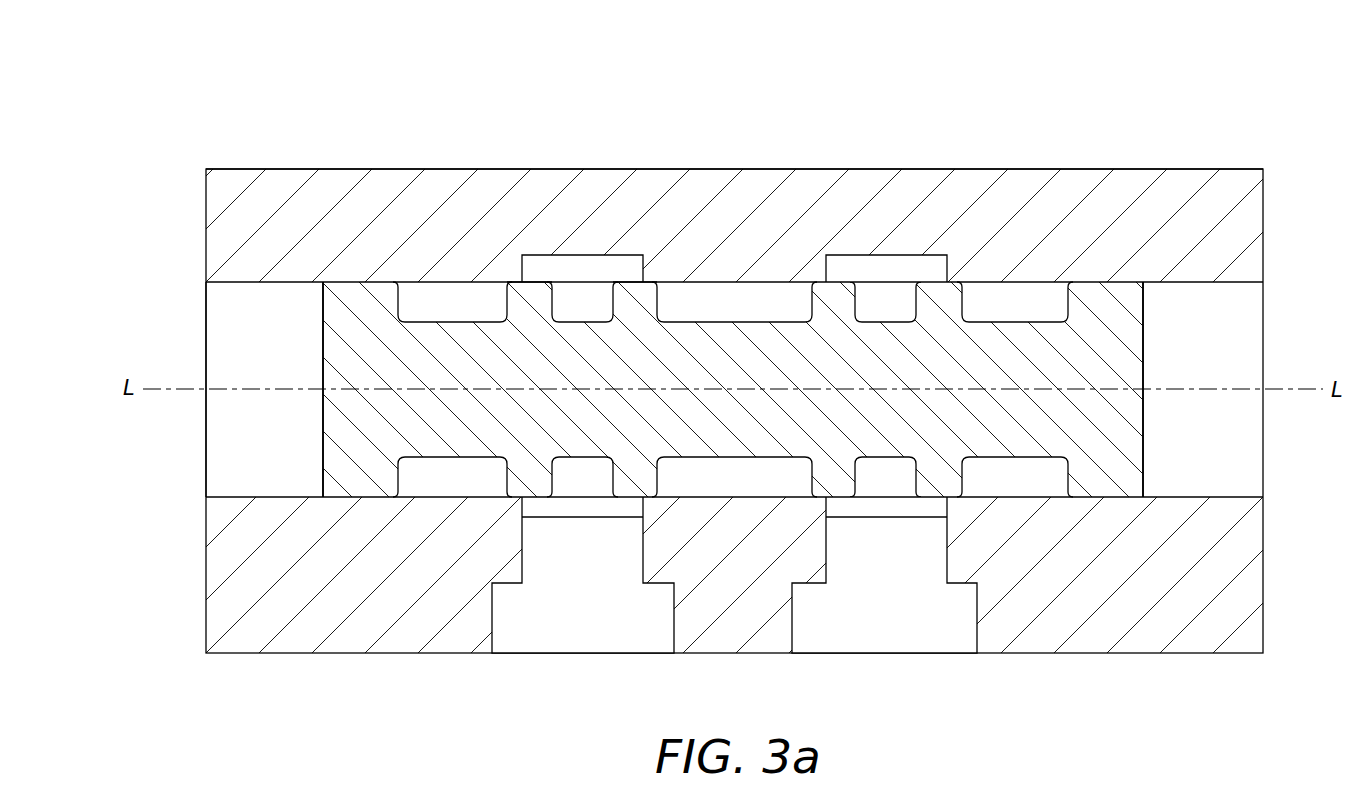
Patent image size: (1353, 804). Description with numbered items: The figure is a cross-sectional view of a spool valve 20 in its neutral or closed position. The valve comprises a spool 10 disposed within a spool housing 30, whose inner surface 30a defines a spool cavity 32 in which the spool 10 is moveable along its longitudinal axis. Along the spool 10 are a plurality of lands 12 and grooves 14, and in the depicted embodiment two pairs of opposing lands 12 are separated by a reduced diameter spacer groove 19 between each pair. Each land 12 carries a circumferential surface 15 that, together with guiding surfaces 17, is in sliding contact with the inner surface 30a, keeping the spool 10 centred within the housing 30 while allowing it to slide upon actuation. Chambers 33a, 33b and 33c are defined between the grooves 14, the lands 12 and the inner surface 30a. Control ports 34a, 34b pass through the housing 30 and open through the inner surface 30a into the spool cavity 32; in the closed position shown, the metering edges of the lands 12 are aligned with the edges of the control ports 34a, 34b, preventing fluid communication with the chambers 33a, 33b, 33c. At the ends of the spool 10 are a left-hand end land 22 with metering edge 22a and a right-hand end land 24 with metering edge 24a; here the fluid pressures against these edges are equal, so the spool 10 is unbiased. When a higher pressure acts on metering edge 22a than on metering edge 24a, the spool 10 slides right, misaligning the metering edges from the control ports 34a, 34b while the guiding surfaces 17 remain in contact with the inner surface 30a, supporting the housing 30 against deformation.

The spool 10 is at (757, 363).
The land 12 is at (525, 292).
The groove 14 is at (453, 318).
The circumferential surface 15 is at (627, 297).
The guiding surface 17 is at (645, 272).
The spacer groove 19 is at (580, 322).
The spool valve 20 is at (197, 104).
The left-hand end land 22 is at (360, 480).
The metering edge 22a is at (323, 440).
The right-hand end land 24 is at (1108, 480).
The metering edge 24a is at (1144, 441).
The spool housing 30 is at (340, 169).
The inner surface 30a is at (254, 282).
The spool cavity 32 is at (218, 312).
The chamber 33a is at (450, 480).
The chamber 33b is at (740, 480).
The chamber 33c is at (1018, 480).
The control port 34a is at (584, 641).
The control port 34b is at (887, 641).